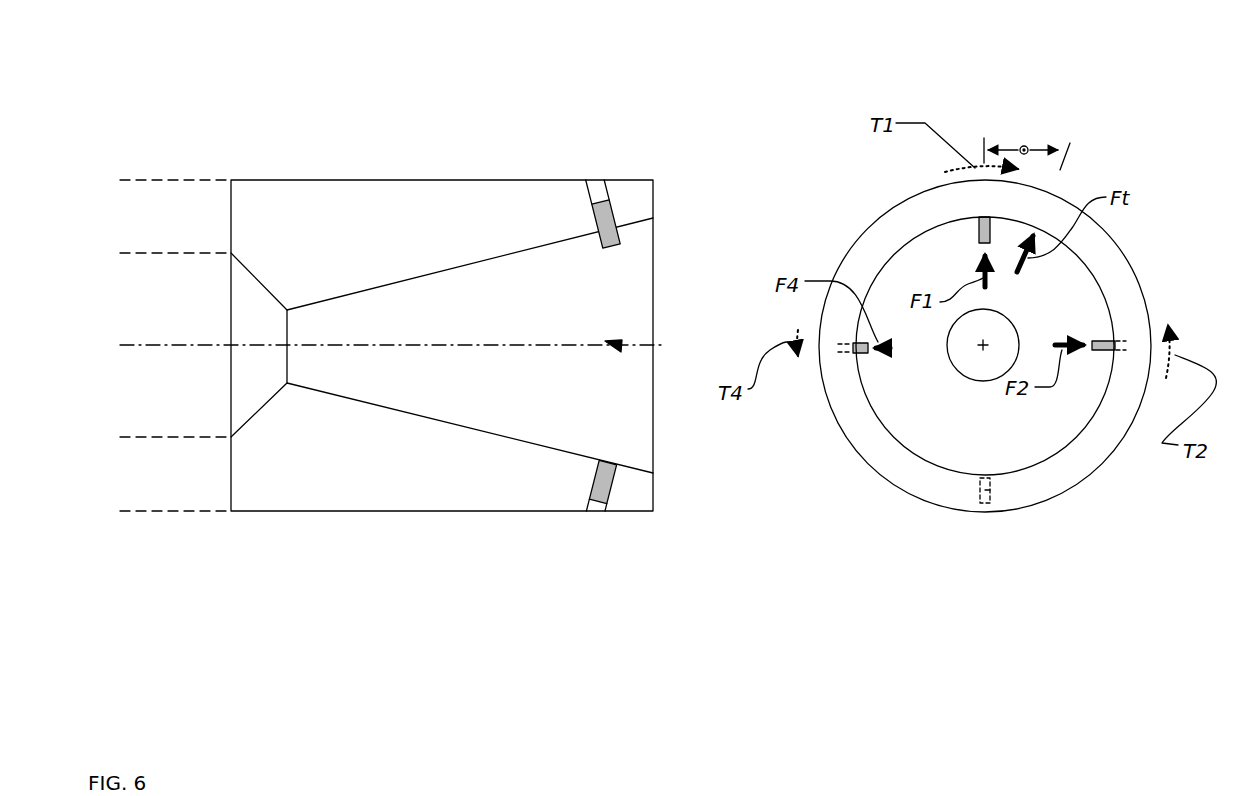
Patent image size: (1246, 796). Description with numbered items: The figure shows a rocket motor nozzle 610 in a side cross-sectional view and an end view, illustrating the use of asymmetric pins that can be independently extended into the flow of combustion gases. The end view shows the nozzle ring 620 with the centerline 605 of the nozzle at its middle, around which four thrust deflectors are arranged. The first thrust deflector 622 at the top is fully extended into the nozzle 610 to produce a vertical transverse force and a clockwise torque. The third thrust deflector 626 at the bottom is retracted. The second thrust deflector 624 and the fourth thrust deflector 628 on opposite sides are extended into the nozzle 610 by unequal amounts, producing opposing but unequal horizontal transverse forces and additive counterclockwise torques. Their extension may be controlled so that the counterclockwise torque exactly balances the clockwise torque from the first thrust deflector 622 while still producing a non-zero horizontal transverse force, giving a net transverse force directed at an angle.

The central axis / bore 605 is at (512, 343).
The nozzle 610 is at (572, 238).
The sensor assembly 620 is at (823, 72).
The first thrust deflector 622 is at (597, 204).
The second thrust deflector 624 is at (621, 341).
The third thrust deflector 626 is at (598, 497).
The fourth thrust deflector 628 is at (859, 356).